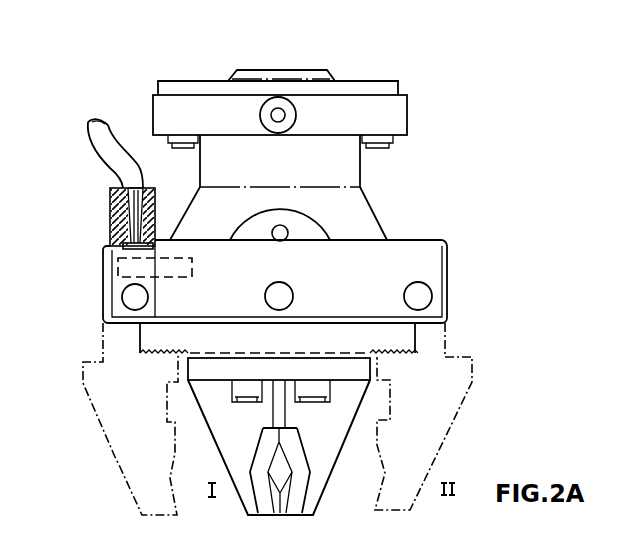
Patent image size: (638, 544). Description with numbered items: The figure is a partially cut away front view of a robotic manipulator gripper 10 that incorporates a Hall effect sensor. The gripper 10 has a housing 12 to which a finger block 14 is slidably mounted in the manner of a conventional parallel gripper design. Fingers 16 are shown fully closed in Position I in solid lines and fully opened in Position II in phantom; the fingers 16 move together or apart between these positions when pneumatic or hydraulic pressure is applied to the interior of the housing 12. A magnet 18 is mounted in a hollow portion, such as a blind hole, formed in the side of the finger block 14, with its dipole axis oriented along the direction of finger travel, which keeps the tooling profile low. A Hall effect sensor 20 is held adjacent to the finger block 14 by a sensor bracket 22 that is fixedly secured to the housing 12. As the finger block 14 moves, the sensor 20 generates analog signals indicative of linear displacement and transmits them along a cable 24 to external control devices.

The gripper 10 is at (281, 35).
The housing 12 is at (362, 186).
The finger block 14 is at (448, 290).
The fingers 16 is at (116, 460).
The magnet 18 is at (118, 276).
The Hall effect sensor 20 is at (115, 247).
The sensor bracket 22 is at (110, 209).
The cable 24 is at (112, 172).